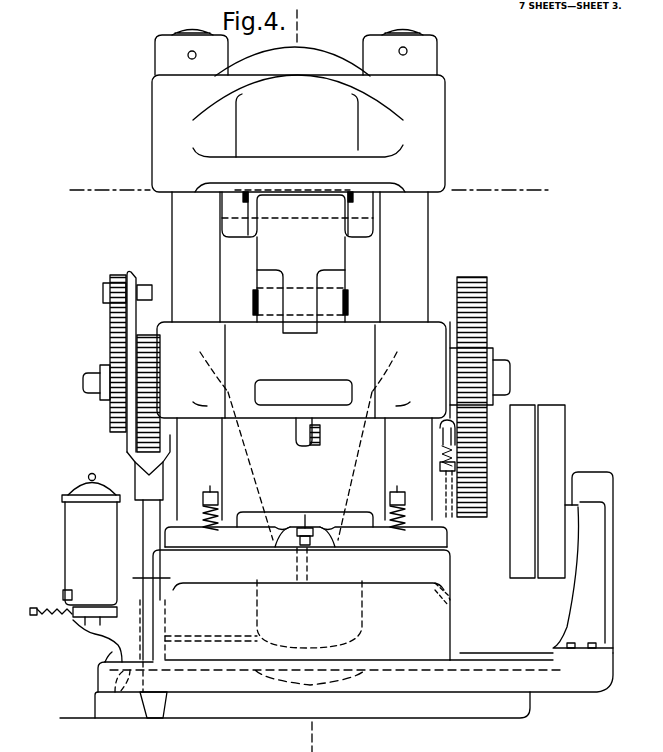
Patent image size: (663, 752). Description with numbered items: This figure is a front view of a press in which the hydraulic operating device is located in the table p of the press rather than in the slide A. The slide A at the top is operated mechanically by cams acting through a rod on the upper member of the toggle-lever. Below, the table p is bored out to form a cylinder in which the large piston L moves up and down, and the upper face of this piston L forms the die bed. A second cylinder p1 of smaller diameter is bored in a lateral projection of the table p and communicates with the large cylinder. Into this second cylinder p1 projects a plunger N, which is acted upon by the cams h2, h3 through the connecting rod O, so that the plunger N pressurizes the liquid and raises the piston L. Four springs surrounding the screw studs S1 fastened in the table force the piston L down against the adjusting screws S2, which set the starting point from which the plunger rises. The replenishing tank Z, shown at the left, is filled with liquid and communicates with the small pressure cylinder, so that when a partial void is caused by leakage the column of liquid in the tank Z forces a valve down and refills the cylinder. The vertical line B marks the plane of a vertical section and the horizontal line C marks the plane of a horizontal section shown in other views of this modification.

The slide A is at (397, 368).
The section line B— B is at (314, 379).
The section line C— C is at (309, 179).
The cam h2 is at (115, 338).
The cam h3 is at (150, 356).
The screw studs S1 is at (398, 486).
The adjusting screws S2 is at (305, 515).
The large piston L is at (357, 585).
The table p is at (301, 604).
The second cylinder p1 is at (133, 648).
The connecting rod O is at (145, 482).
The plunger N is at (147, 524).
The replenishing tank Z is at (75, 550).